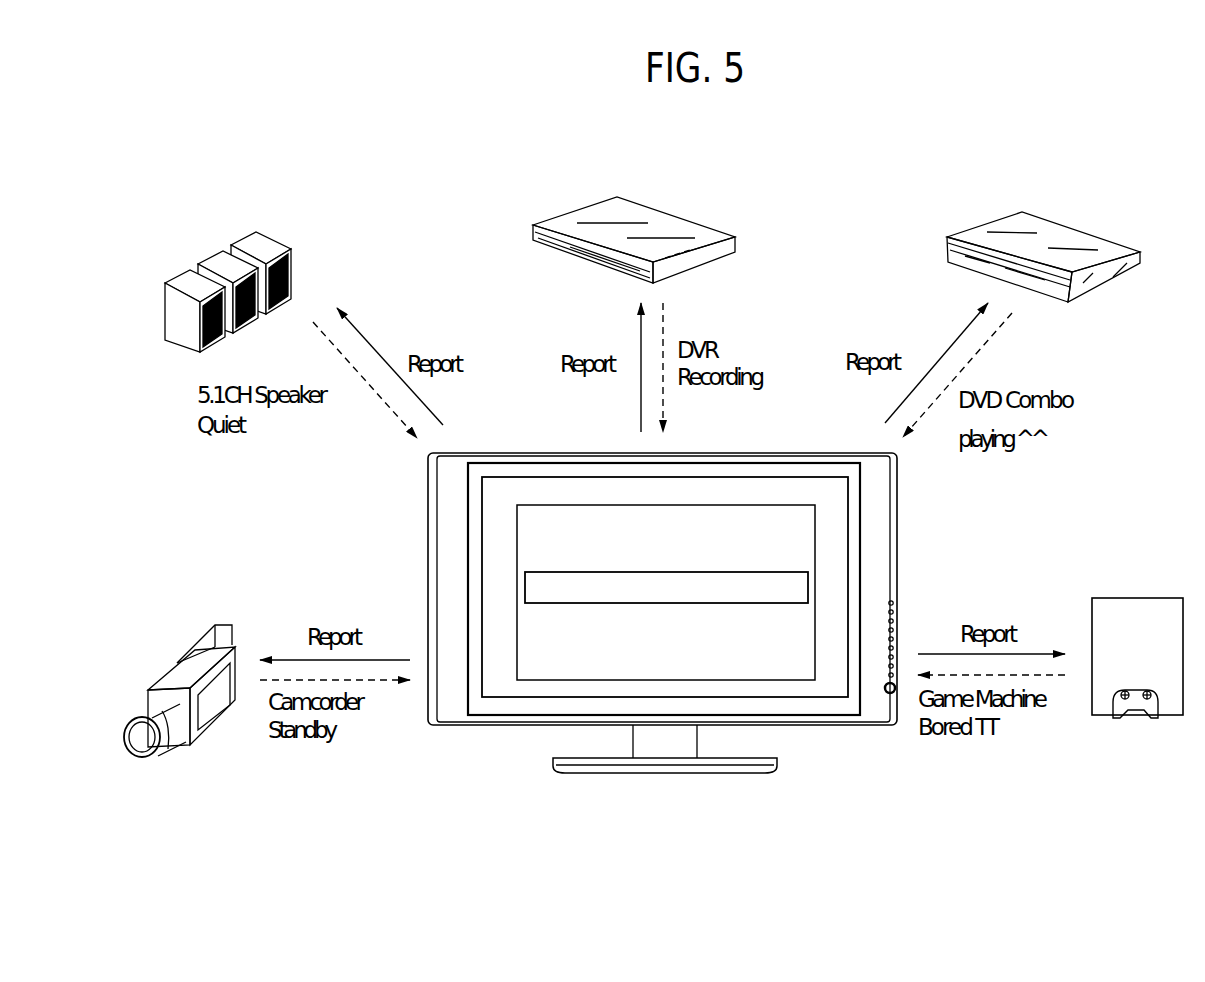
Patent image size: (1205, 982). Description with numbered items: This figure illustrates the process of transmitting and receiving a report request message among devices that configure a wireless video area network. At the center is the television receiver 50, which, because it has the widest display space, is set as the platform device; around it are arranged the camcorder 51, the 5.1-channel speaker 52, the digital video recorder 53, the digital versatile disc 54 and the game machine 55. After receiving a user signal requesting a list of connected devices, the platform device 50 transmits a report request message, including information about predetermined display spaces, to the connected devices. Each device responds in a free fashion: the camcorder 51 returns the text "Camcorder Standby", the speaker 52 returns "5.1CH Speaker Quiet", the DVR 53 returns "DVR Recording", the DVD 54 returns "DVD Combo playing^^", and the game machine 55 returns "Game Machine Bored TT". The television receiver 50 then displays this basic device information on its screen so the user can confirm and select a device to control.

The television receiver 50 is at (667, 752).
The camcorder 51 is at (170, 665).
The 5.1-channel speaker 52 is at (210, 257).
The digital video recorder 53 is at (663, 220).
The digital versatile disc 54 is at (1065, 230).
The game machine 55 is at (1140, 603).